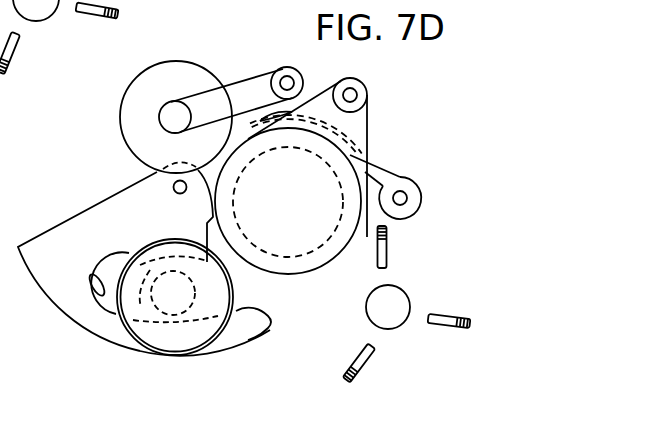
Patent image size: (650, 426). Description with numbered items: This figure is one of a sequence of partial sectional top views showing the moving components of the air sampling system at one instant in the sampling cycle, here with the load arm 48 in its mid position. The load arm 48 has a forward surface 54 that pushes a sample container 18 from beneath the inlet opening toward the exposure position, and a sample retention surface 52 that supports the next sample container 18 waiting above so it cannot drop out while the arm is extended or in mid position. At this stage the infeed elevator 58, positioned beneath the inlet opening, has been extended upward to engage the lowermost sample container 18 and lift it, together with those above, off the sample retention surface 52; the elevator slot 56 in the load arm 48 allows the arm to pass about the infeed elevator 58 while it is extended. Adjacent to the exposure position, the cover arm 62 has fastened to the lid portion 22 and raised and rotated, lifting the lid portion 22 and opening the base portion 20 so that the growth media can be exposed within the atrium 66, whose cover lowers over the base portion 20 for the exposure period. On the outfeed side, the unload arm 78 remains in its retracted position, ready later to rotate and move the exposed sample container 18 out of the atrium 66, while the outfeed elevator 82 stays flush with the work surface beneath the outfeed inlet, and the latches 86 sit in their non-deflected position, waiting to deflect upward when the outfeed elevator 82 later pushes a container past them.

The sample container 18 is at (225, 328).
The base portion 20 is at (291, 238).
The lid portion 22 is at (118, 119).
The load arm 48 is at (97, 203).
The sample retention surface 52 is at (153, 227).
The forward surface 54 is at (259, 318).
The elevator slot 56 is at (92, 279).
The infeed elevator 58 is at (139, 307).
The cover arm 62 is at (282, 68).
The atrium 66 is at (312, 185).
The unload arm 78 is at (403, 176).
The outfeed elevator 82 is at (407, 286).
The latches 86 is at (447, 312).